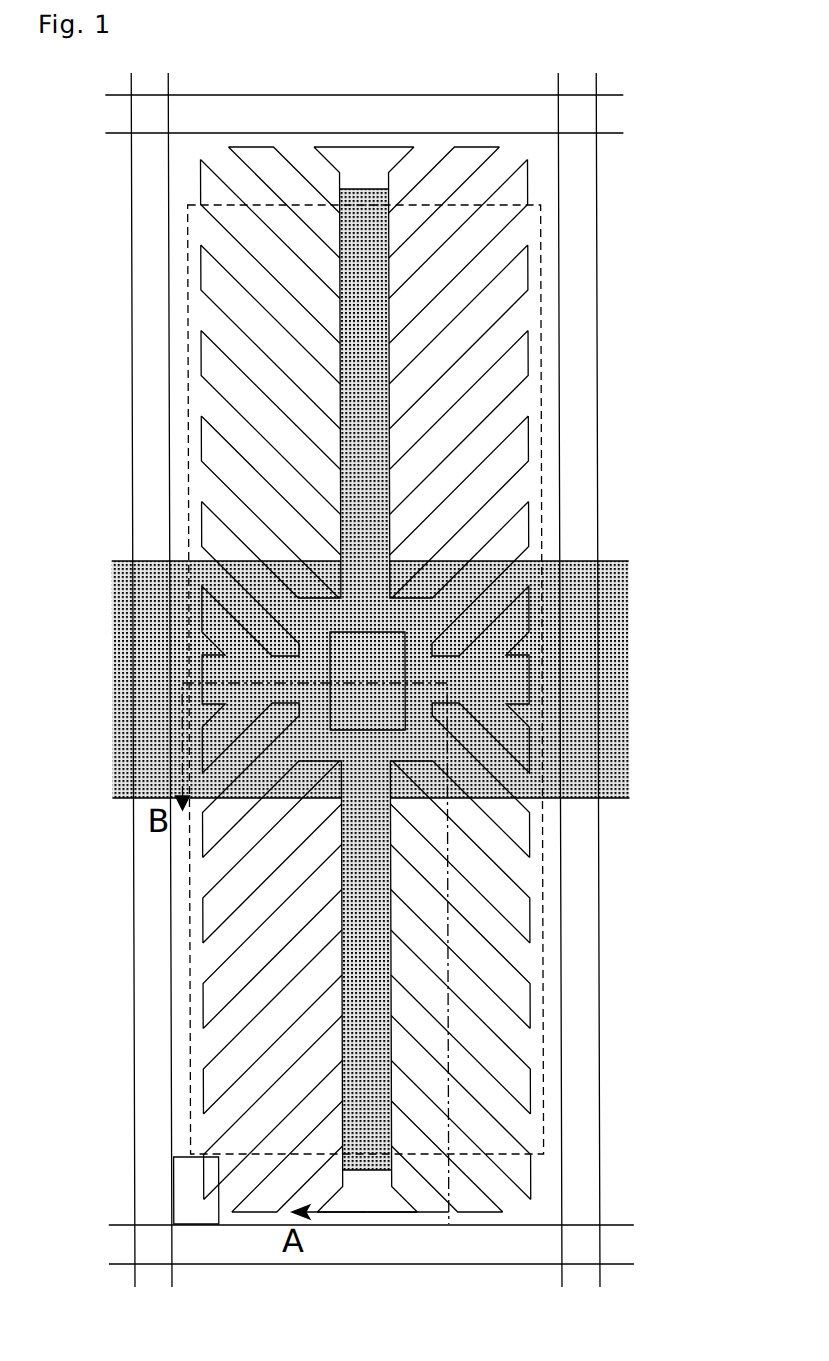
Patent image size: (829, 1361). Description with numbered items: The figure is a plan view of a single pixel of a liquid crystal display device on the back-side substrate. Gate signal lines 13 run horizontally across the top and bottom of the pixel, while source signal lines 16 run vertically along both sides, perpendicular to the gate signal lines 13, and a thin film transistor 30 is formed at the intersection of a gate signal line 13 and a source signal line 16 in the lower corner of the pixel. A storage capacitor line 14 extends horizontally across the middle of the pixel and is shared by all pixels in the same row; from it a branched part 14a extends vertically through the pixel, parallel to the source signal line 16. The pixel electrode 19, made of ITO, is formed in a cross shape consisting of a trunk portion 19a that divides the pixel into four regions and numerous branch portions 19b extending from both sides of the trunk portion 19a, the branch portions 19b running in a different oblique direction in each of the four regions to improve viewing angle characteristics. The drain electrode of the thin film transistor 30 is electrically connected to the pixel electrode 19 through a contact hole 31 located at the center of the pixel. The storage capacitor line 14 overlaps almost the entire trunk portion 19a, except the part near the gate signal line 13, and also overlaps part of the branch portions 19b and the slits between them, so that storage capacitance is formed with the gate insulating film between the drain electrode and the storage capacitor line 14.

The gate signal line 13 is at (610, 117).
The source signal line 16 is at (587, 390).
The storage capacitor line 14 is at (610, 668).
The branched part 14a is at (380, 936).
The pixel electrode 19 is at (481, 679).
The trunk portion 19a is at (507, 687).
The branch portion 19b is at (525, 828).
The contact hole 31 is at (385, 652).
The thin film transistor 30 is at (192, 1210).